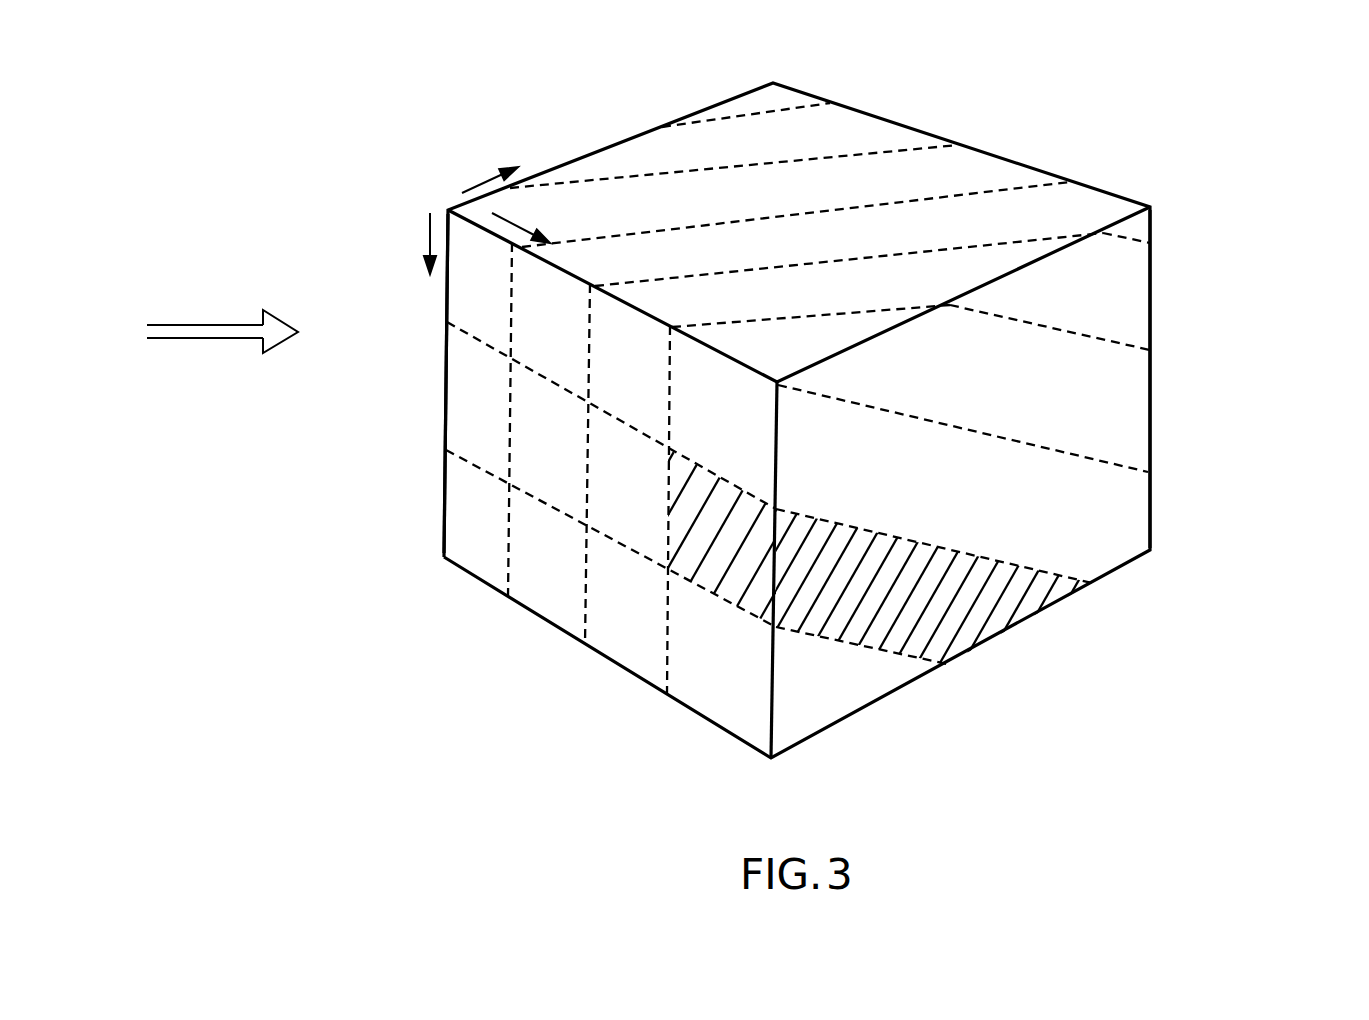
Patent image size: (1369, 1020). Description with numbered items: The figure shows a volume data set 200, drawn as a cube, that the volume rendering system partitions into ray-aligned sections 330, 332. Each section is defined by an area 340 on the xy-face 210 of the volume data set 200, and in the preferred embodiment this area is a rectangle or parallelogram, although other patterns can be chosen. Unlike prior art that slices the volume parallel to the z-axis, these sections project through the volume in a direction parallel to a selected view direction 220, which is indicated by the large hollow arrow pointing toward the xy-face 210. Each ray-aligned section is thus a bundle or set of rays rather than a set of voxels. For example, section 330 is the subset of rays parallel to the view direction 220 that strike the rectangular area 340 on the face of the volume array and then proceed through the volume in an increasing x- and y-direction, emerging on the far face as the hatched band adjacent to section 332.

The volume data set 200 is at (1033, 167).
The xy-face 210 is at (434, 319).
The view direction 220 is at (222, 343).
The ray-aligned section 330 is at (985, 634).
The ray-aligned section 332 is at (1125, 522).
The area 340 is at (732, 575).